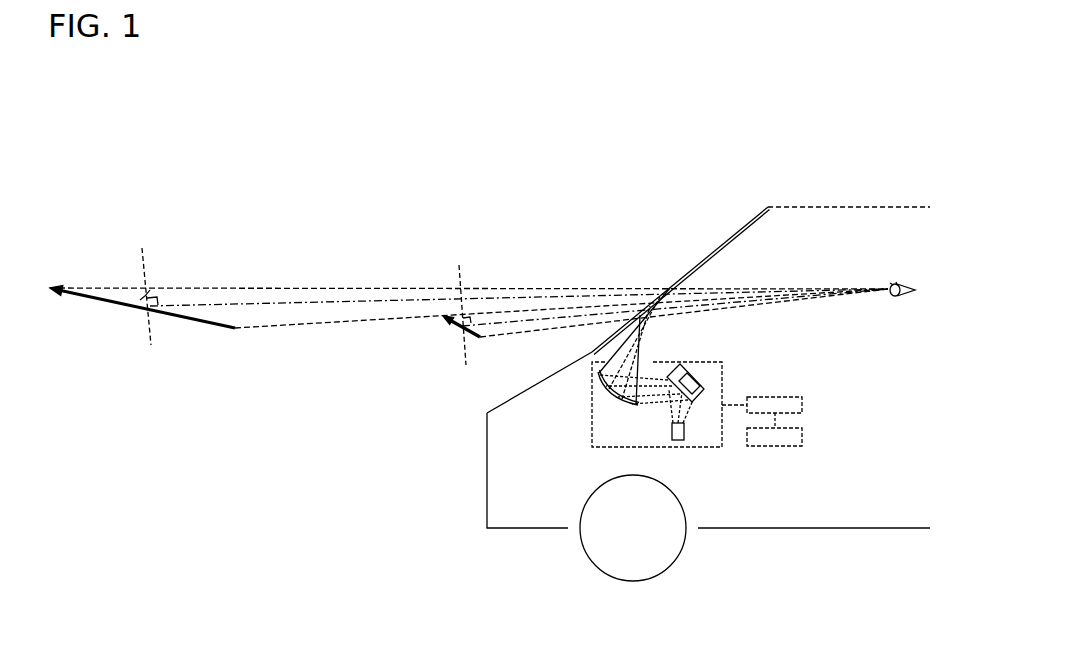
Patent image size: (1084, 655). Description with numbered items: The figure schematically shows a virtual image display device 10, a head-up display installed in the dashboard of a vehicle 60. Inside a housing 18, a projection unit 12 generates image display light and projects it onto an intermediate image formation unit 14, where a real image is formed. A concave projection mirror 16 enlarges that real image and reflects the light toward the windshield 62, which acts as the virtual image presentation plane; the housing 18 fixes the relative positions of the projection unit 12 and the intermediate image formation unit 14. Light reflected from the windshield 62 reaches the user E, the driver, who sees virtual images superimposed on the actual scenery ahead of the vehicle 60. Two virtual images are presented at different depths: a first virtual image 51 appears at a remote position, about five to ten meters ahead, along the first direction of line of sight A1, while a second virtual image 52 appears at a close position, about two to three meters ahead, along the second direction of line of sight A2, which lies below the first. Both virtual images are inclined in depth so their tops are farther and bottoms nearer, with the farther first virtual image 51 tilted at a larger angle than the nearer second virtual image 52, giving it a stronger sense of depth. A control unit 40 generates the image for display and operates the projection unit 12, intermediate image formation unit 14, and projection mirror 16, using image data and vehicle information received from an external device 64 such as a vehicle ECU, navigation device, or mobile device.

The virtual image display device 10 is at (669, 387).
The projection unit 12 is at (687, 434).
The intermediate image formation unit 14 is at (692, 372).
The projection mirror 16 is at (612, 398).
The housing 18 is at (592, 438).
The control unit 40 is at (803, 405).
The external device 64 is at (803, 437).
The first virtual image 51 is at (76, 306).
The second virtual image 52 is at (452, 338).
The vehicle 60 is at (850, 155).
The windshield 62 is at (738, 240).
The user E is at (900, 283).
The first direction of line of sight A1 is at (268, 305).
The second direction of line of sight A2 is at (508, 330).